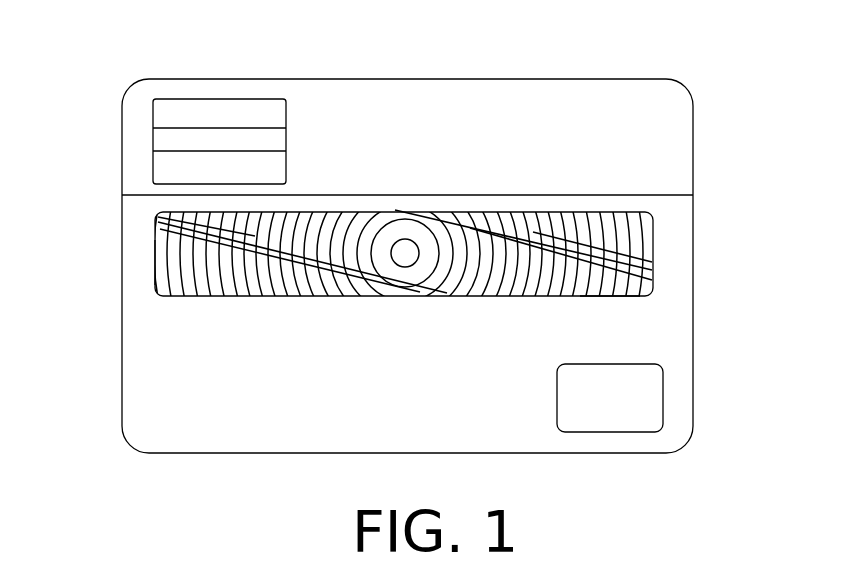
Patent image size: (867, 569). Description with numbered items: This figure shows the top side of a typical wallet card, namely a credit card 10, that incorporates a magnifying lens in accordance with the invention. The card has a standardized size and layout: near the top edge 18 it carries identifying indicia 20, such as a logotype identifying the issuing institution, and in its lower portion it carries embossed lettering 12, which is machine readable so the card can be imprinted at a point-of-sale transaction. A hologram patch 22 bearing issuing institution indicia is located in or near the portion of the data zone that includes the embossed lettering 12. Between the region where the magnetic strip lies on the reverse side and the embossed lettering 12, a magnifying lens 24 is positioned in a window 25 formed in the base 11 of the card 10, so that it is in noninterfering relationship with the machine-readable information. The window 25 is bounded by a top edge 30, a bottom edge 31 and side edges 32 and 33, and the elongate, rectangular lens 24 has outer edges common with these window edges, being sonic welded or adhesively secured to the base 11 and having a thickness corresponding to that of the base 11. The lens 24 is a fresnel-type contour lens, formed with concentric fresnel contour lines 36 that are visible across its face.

The credit card 10 is at (660, 68).
The card base 11 is at (137, 332).
The embossed lettering 12 is at (440, 410).
The top edge 18 is at (550, 79).
The identifying indicia 20 is at (200, 99).
The hologram patch 22 is at (642, 410).
The magnifying lens 24 is at (638, 248).
The window 25 is at (152, 237).
The top edge of window 30 is at (578, 210).
The bottom edge of window 31 is at (610, 296).
The side edge of window 32 is at (155, 267).
The side edge of window 33 is at (657, 274).
The fresnel contour lines 36 is at (605, 233).